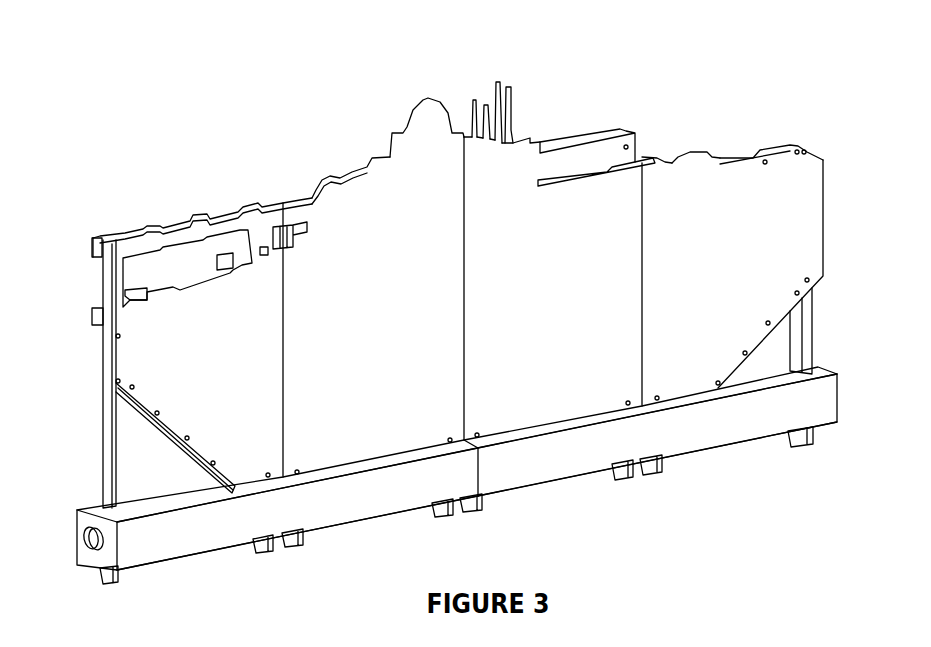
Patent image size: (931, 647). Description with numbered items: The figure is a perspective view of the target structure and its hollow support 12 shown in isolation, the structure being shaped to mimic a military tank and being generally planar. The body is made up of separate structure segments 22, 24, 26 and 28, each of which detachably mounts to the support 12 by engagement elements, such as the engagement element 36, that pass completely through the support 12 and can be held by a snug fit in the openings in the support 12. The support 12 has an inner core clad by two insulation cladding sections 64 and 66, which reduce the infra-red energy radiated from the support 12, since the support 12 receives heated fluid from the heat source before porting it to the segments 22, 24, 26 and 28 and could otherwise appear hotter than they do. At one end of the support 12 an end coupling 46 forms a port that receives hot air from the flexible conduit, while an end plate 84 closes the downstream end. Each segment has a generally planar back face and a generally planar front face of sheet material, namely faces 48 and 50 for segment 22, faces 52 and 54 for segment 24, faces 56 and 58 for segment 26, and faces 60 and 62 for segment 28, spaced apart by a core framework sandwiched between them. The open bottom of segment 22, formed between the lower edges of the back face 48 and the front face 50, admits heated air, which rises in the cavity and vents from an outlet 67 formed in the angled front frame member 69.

The hollow support 12 is at (457, 477).
The structure segment 22 is at (202, 311).
The structure segment 24 is at (377, 276).
The structure segment 26 is at (559, 223).
The structure segment 28 is at (733, 240).
The engagement element 36 is at (110, 362).
The end coupling 46 is at (92, 553).
The back face 48 is at (127, 232).
The front face 50 is at (182, 230).
The back face 52 is at (352, 167).
The front face 54 is at (365, 170).
The back face 56 is at (493, 82).
The front face 58 is at (512, 110).
The back face 60 is at (673, 158).
The front face 62 is at (758, 152).
The insulation cladding section 64 is at (343, 508).
The insulation cladding section 66 is at (707, 437).
The outlet 67 is at (208, 478).
The angled front frame member 69 is at (193, 465).
The end plate 84 is at (835, 398).